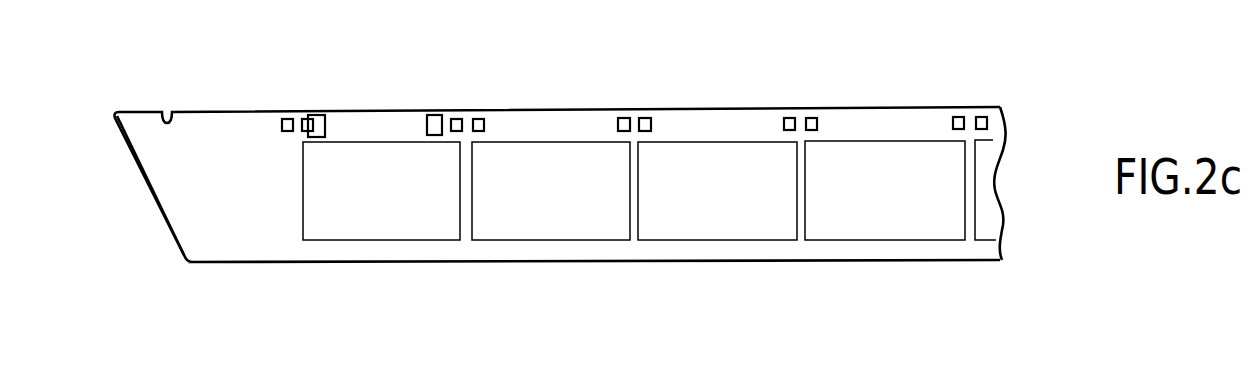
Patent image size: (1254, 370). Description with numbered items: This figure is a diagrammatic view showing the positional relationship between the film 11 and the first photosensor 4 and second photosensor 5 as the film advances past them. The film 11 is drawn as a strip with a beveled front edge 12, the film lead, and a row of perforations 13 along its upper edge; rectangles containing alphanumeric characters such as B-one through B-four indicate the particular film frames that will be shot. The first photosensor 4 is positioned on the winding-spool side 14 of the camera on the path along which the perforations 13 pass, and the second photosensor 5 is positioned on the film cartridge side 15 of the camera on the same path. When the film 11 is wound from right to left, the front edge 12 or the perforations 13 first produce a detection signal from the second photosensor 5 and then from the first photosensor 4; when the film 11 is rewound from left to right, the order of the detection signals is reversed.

The film 11 is at (225, 120).
The front edge 12 is at (145, 183).
The first photosensor 4 is at (313, 117).
The second photosensor 5 is at (432, 117).
The perforations 13 is at (642, 117).
The winding-spool side 14 is at (60, 238).
The film cartridge side 15 is at (1054, 200).